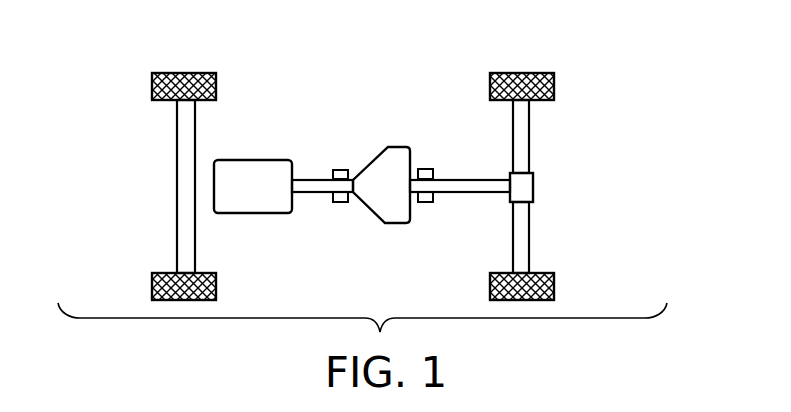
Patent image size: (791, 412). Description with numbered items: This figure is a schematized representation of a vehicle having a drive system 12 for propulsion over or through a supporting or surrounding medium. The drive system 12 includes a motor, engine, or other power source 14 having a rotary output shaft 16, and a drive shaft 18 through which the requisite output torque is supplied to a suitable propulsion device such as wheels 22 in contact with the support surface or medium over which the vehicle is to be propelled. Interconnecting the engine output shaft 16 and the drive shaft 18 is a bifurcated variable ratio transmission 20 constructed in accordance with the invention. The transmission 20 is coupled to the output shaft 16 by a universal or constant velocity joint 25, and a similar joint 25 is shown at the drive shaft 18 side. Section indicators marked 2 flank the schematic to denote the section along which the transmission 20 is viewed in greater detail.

The section line 2- 2 is at (148, 185).
The drive system 12 is at (177, 141).
The power source 14 is at (248, 170).
The rotary output shaft 16 is at (317, 178).
The drive shaft 18 is at (460, 178).
The bifurcated variable ratio transmission 20 is at (398, 141).
The wheels 22 is at (553, 73).
The universal or constant velocity joint 25 is at (337, 202).